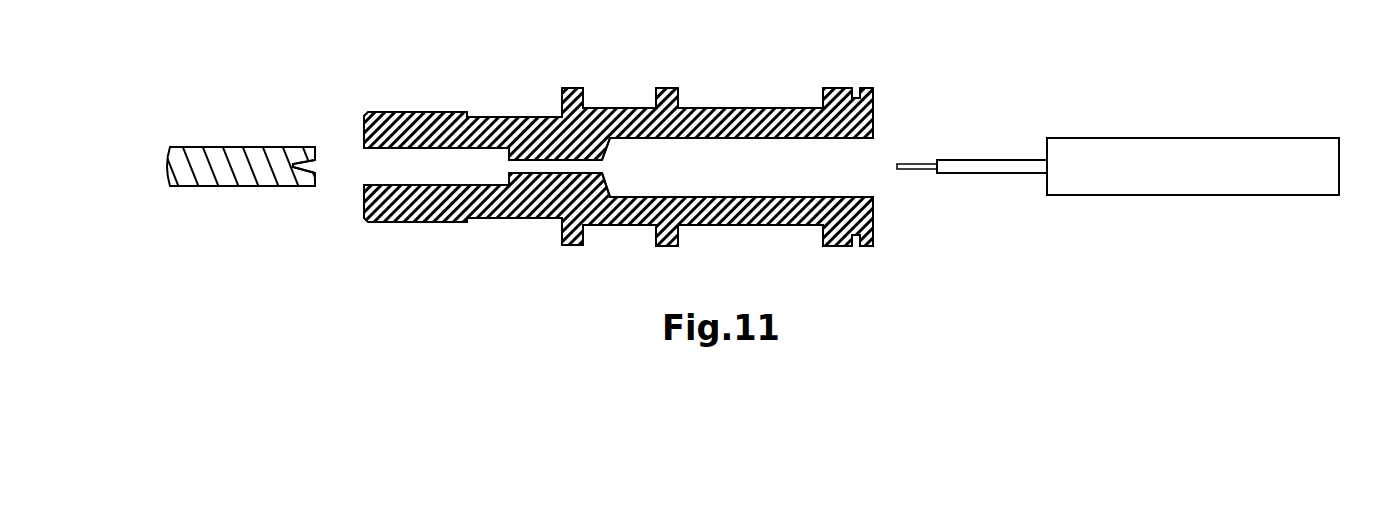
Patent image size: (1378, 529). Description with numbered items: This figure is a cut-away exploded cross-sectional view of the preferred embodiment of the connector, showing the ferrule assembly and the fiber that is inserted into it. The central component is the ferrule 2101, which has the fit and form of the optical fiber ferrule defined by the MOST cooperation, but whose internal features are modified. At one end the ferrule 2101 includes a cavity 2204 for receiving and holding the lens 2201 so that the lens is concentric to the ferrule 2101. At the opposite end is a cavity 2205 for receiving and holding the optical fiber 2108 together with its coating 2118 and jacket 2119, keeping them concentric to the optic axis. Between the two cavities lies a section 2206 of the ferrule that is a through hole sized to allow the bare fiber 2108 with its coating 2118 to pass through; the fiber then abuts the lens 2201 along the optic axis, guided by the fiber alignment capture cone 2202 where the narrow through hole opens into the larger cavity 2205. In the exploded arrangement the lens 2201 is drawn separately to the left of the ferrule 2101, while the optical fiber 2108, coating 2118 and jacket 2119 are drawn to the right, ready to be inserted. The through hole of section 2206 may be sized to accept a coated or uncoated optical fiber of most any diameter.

The lens 2201 is at (237, 160).
The fiber alignment capture cone 2202 is at (313, 168).
The ferrule 2101 is at (622, 122).
The cavity 2204 is at (432, 162).
The section 2206 is at (550, 166).
The cavity 2205 is at (768, 162).
The optical fiber 2108 is at (913, 167).
The coating 2118 is at (988, 167).
The jacket 2119 is at (1135, 155).